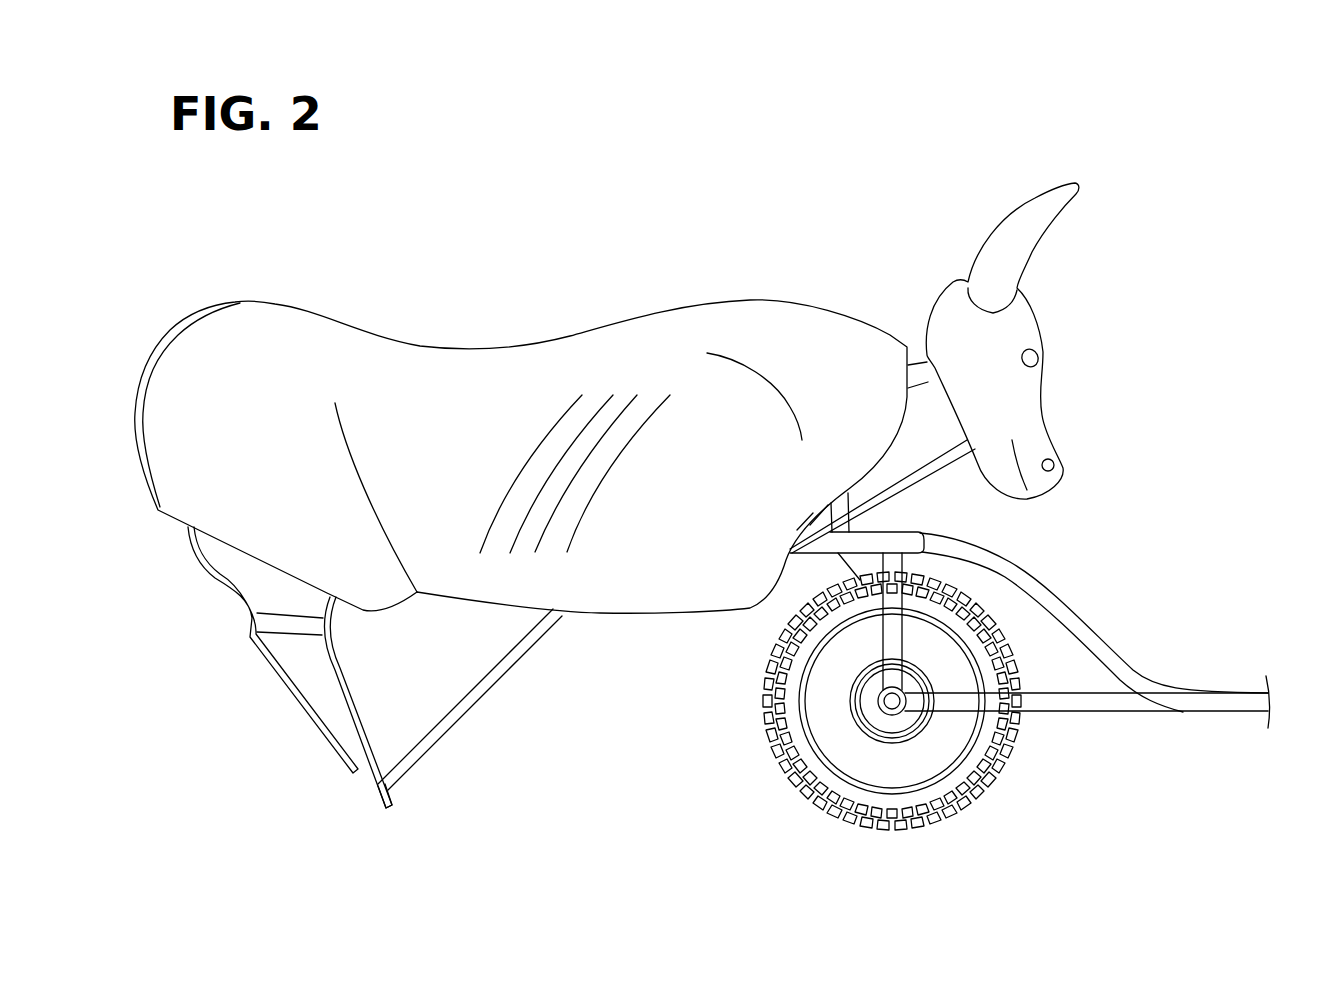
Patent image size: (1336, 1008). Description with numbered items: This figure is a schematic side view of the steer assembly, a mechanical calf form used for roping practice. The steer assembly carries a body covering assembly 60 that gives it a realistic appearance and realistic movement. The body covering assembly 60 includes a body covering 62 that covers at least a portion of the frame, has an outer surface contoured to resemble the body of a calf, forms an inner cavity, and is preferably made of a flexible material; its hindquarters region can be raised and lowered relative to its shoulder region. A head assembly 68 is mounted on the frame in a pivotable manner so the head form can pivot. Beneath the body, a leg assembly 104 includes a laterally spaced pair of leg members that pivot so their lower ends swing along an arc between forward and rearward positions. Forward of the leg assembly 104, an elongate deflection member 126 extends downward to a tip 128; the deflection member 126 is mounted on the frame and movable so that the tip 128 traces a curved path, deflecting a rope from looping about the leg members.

The body covering assembly 60 is at (402, 295).
The body covering 62 is at (523, 385).
The head assembly 68 is at (1088, 370).
The leg assembly 104 is at (235, 686).
The elongate deflection member 126 is at (490, 678).
The tip 128 is at (405, 793).